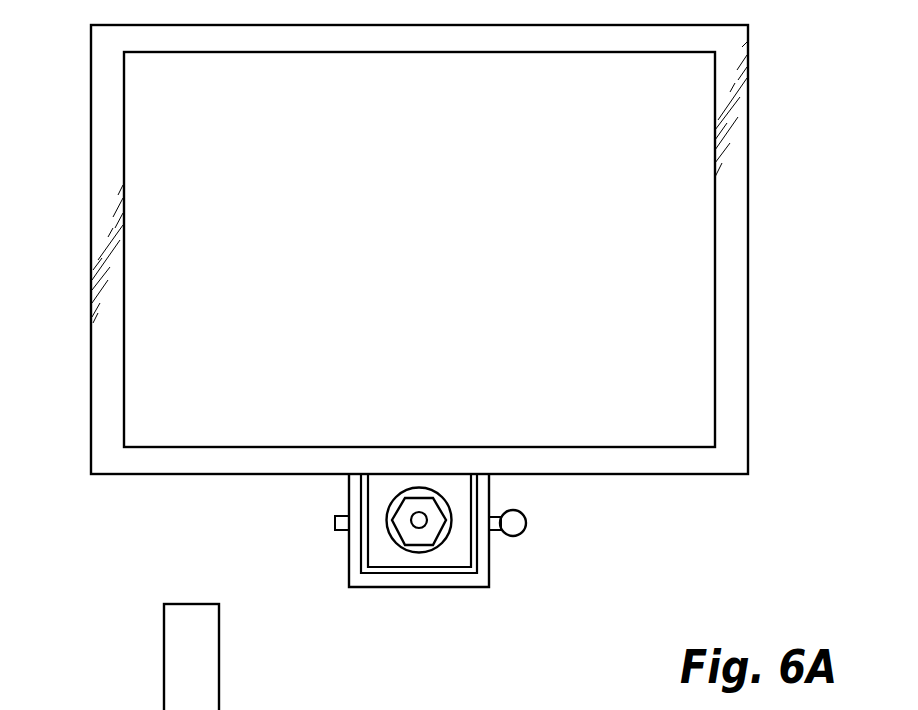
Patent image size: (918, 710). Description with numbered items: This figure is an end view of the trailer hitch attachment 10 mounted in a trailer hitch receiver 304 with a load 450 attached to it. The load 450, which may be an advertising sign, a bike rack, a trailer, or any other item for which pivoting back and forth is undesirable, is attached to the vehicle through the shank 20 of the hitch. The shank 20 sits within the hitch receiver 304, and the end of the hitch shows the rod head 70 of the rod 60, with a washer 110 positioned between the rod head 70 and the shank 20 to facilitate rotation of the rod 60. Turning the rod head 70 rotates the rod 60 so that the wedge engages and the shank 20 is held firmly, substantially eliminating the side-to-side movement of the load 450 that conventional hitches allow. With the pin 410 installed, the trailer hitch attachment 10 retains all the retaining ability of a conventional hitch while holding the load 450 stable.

The load 450 is at (105, 84).
The trailer hitch receiver 304 is at (472, 577).
The shank 20 is at (368, 542).
The trailer hitch attachment 10 is at (460, 550).
The washer 110 is at (417, 550).
The rod head 70 is at (433, 513).
The rod 60 is at (417, 518).
The pin 410 is at (508, 522).